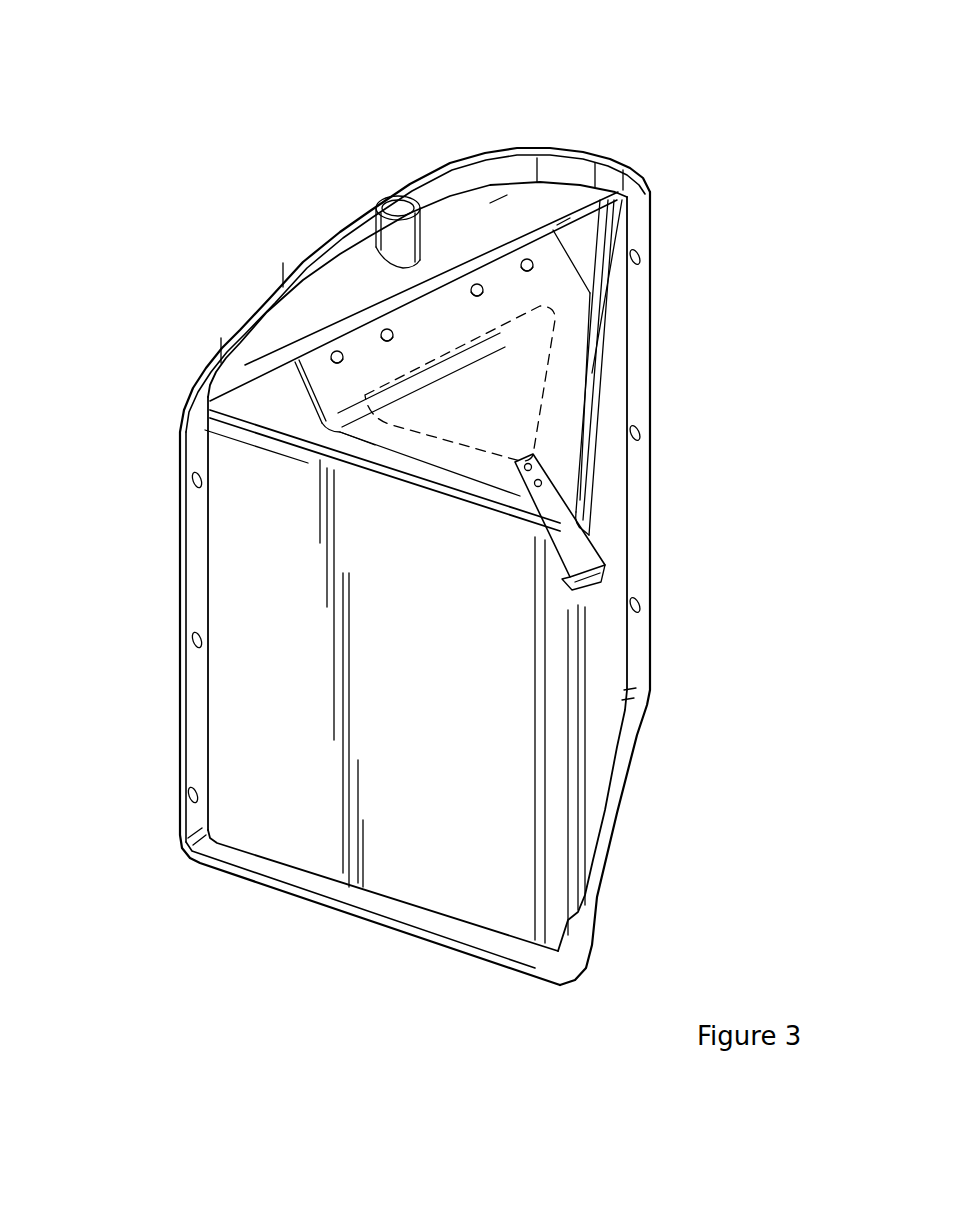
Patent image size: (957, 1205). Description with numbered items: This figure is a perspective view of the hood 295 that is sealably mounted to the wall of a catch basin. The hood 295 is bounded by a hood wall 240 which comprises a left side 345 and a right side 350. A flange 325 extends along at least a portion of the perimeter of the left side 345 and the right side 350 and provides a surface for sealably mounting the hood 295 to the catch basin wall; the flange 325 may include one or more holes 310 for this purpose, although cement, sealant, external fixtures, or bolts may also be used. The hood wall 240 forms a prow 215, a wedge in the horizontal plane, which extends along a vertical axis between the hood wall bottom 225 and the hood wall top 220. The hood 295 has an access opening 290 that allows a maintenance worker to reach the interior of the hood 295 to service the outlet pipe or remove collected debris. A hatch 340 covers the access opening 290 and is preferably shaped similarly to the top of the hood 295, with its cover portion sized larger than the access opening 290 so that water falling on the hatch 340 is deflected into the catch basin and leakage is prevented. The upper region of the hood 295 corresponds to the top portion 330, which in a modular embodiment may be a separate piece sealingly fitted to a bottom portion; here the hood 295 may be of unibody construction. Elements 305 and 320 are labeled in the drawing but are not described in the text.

The hood 295 is at (655, 135).
The filler tube 305 is at (400, 202).
The holes 310 is at (215, 494).
The top portion 330 is at (277, 405).
The flange 325 is at (190, 521).
The hatch 340 is at (560, 300).
The access opening 290 is at (518, 352).
The right flange of frame 320 is at (643, 367).
The hood wall top 220 is at (587, 510).
The right side 350 is at (590, 628).
The prow 215 is at (570, 690).
The hood wall 240 is at (597, 737).
The hood wall bottom 225 is at (577, 910).
The left side 345 is at (437, 782).